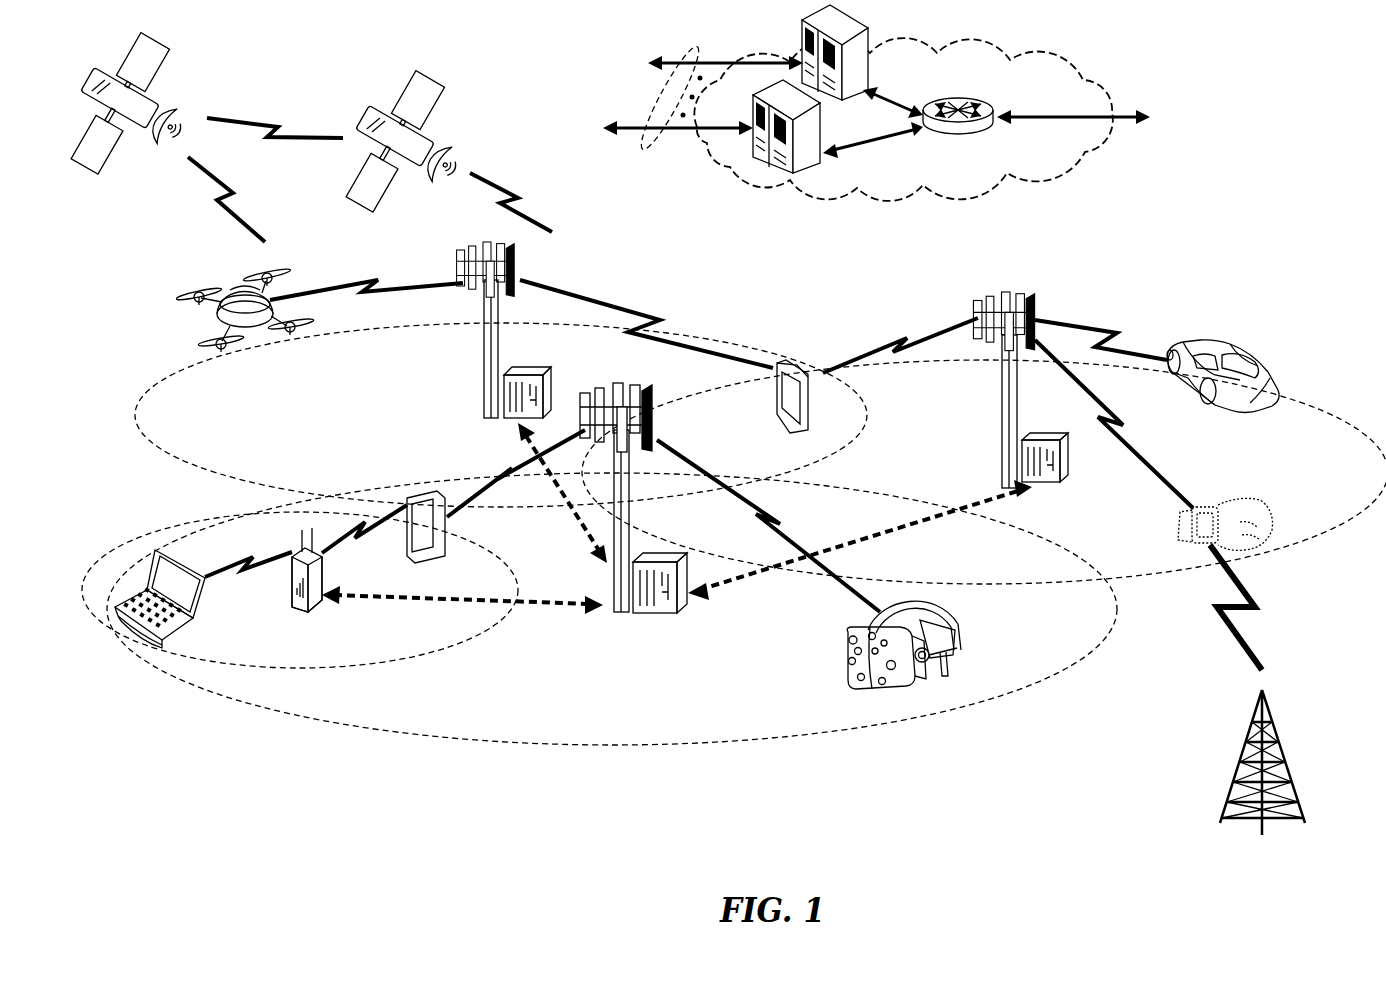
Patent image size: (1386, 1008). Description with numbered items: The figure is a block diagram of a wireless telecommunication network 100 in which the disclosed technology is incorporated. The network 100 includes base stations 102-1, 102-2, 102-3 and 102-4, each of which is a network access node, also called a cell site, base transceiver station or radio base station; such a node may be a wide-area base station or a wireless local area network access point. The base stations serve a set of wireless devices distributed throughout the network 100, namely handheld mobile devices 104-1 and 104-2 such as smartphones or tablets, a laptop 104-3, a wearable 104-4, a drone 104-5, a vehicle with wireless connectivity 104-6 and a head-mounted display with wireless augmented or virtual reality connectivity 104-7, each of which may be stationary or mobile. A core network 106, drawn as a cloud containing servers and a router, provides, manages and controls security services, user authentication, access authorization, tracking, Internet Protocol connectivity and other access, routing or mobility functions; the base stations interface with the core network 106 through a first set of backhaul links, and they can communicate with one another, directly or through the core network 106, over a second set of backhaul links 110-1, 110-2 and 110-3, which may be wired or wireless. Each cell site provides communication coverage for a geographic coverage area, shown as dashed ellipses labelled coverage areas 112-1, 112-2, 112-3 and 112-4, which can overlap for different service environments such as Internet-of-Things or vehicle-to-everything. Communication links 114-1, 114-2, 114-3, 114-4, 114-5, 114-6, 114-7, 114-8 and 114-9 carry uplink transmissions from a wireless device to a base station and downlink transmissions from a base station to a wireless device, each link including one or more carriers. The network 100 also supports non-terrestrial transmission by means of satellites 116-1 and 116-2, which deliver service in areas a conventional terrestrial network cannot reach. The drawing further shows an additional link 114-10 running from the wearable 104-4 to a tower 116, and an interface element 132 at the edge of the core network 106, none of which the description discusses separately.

The wireless telecommunication network 100 is at (1298, 101).
The base station 102-1 is at (615, 613).
The base station 102-2 is at (488, 364).
The base station 102-3 is at (1003, 402).
The base station 102-4 is at (291, 598).
The handheld mobile device 104-1 is at (487, 536).
The handheld mobile device 104-2 is at (775, 397).
The laptop 104-3 is at (137, 628).
The wearable 104-4 is at (1210, 493).
The drone 104-5 is at (263, 332).
The vehicle with wireless connectivity 104-6 is at (1242, 350).
The head-mounted display with wireless AR/VR connectivity 104-7 is at (955, 631).
The core network 106 is at (987, 182).
The backhaul link 110-1 is at (372, 600).
The backhaul link 110-2 is at (927, 520).
The backhaul link 110-3 is at (580, 522).
The geographic coverage area 112-1 is at (547, 743).
The geographic coverage area 112-2 is at (427, 655).
The geographic coverage area 112-3 is at (202, 468).
The geographic coverage area 112-4 is at (1307, 394).
The communication link 114-1 is at (778, 519).
The communication link 114-2 is at (508, 467).
The communication link 114-3 is at (217, 578).
The communication link 114-4 is at (372, 545).
The communication link 114-5 is at (368, 282).
The communication link 114-6 is at (897, 338).
The communication link 114-7 is at (660, 318).
The communication link 114-8 is at (1135, 440).
The communication link 114-9 is at (1100, 334).
The communication link 114-10 is at (1243, 611).
The radio tower 116 is at (1276, 736).
The satellite 116-1 is at (160, 110).
The satellite 116-2 is at (435, 150).
The network interface 132 is at (660, 147).